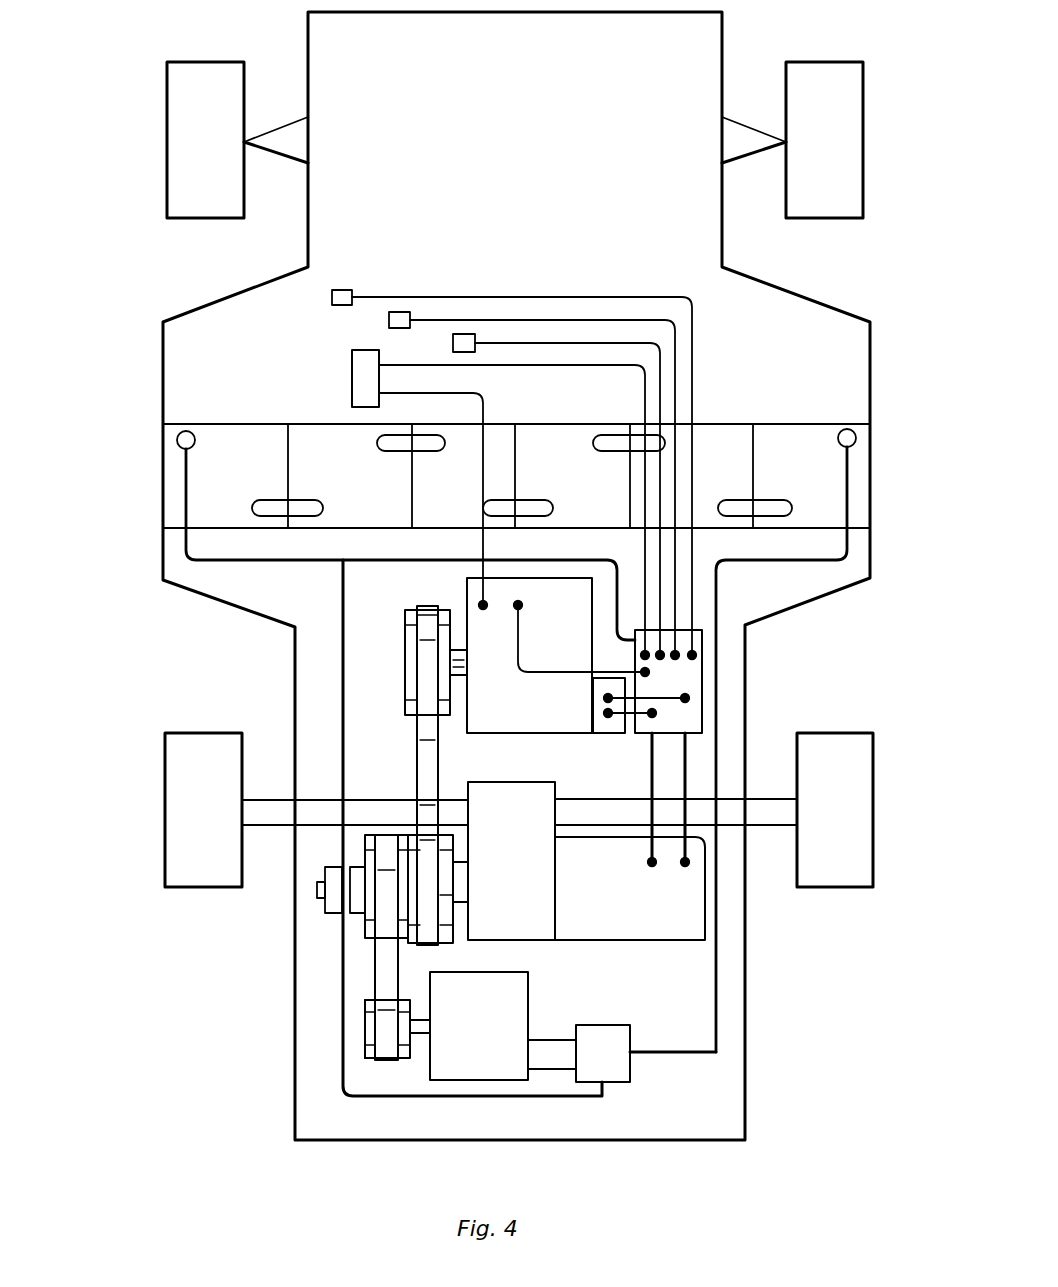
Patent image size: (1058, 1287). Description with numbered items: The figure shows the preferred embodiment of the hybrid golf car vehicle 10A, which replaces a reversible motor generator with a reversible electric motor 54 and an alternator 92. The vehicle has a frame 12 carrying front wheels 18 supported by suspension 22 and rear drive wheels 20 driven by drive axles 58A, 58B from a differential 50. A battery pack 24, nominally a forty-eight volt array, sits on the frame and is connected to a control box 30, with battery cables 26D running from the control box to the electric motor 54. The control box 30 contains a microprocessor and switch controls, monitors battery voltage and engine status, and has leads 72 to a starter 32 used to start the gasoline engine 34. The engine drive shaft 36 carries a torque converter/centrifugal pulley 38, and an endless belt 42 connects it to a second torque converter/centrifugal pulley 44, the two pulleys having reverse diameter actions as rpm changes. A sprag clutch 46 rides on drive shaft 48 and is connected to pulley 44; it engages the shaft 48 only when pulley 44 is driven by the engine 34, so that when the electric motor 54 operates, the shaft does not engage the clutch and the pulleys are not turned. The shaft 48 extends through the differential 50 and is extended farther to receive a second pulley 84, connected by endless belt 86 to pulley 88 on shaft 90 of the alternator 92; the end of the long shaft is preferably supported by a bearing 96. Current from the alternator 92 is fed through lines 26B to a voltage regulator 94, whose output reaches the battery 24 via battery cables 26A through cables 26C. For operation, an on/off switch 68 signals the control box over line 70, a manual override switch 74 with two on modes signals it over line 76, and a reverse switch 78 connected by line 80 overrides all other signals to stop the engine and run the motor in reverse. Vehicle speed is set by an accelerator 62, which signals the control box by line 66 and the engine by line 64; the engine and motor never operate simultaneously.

The hybrid golf car vehicle 10A is at (113, 258).
The frame 12 is at (865, 358).
The front wheels 18 is at (200, 62).
The rear drive wheels 20 is at (205, 888).
The suspension 22 is at (285, 157).
The battery pack 24 is at (865, 470).
The battery cables 26A is at (184, 506).
The lines 26B is at (553, 1040).
The cables 26C is at (672, 1052).
The battery cables 26D is at (683, 810).
The control box 30 is at (702, 680).
The starter 32 is at (610, 735).
The gasoline engine 34 is at (529, 655).
The engine drive shaft 36 is at (460, 674).
The torque converter/centrifugal pulley 38 is at (405, 645).
The endless belt 42 is at (417, 762).
The second torque converter/centrifugal pulley 44 is at (450, 862).
The sprag clutch 46 is at (360, 912).
The drive shaft 48 is at (468, 902).
The differential 50 is at (511, 861).
The electric motor 54 is at (630, 888).
The drive axle 58A is at (280, 805).
The drive axle 58B is at (768, 825).
The accelerator 62 is at (352, 378).
The line 64 is at (487, 413).
The line 66 is at (582, 368).
The on/off switch 68 is at (332, 298).
The line 70 is at (445, 297).
The leads 72 is at (560, 671).
The manual override switch 74 is at (389, 320).
The line 76 is at (502, 320).
The reverse switch 78 is at (453, 343).
The line 80 is at (570, 343).
The second pulley 84 is at (375, 950).
The endless belt 86 is at (385, 1020).
The pulley 88 is at (368, 1040).
The shaft 90 is at (418, 1035).
The alternator 92 is at (479, 1026).
The voltage regulator 94 is at (603, 1053).
The bearing 96 is at (327, 912).